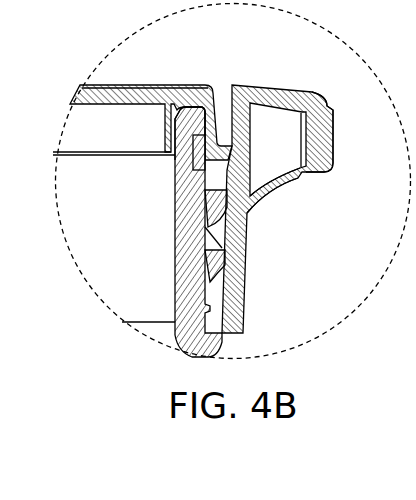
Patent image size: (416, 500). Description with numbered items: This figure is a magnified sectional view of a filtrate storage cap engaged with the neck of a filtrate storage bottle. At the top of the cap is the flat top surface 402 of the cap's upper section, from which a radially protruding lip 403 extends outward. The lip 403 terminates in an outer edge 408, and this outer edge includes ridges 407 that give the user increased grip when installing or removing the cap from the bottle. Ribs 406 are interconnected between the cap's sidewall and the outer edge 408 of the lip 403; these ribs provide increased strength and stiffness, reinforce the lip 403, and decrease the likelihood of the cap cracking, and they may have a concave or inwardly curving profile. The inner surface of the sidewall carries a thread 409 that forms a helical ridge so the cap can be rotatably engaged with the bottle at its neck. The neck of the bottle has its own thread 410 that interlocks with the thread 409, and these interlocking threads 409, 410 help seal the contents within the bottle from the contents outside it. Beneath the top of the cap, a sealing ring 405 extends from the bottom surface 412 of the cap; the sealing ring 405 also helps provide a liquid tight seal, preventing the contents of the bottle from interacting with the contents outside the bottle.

The flat top surface 402 is at (148, 85).
The radially protruding lip 403 is at (285, 90).
The sealing ring 405 is at (168, 122).
The ribs 406 is at (287, 190).
The ridges 407 is at (334, 139).
The outer edge 408 is at (301, 143).
The thread 409 is at (226, 222).
The thread 410 is at (174, 269).
The bottom surface 412 is at (126, 104).